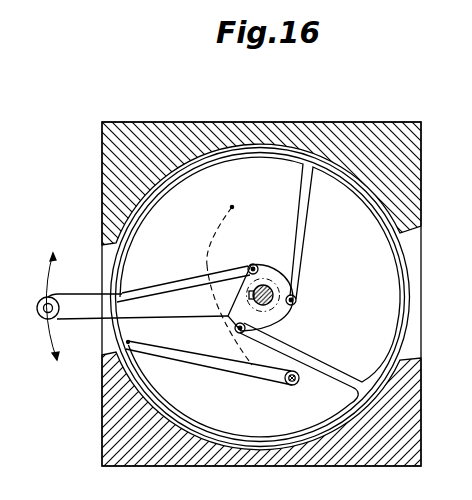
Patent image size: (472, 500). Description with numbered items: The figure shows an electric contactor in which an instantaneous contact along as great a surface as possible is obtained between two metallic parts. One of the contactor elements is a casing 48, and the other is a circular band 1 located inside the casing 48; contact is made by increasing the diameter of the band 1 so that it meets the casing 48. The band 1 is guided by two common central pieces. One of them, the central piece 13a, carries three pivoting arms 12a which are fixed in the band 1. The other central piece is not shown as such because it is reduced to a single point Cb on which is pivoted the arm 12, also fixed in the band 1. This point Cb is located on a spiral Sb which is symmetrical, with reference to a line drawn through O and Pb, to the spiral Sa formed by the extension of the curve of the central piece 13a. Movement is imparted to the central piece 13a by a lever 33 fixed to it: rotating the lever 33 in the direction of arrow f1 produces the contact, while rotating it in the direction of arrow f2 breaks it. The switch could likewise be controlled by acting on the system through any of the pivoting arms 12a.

The casing 48 is at (385, 128).
The circular band 1 is at (257, 151).
The pivoting arms 12a is at (228, 271).
The arm 12 is at (178, 352).
The central piece 13a is at (272, 325).
The lever 33 is at (85, 302).
The center point O is at (294, 293).
The pivot point Cb is at (290, 386).
The spiral Sa is at (224, 233).
The spiral Sb is at (233, 351).
The point of symmetry line Pb is at (126, 342).
The arrow of contact direction f1 is at (62, 345).
The arrow of breaking direction f2 is at (58, 306).